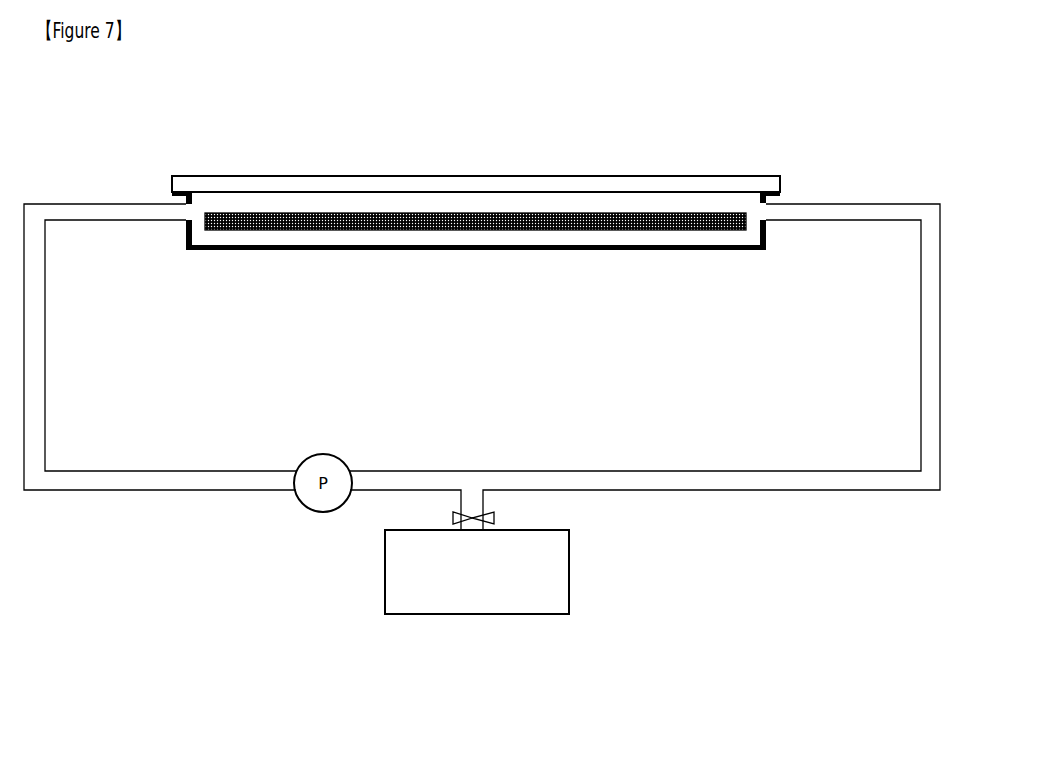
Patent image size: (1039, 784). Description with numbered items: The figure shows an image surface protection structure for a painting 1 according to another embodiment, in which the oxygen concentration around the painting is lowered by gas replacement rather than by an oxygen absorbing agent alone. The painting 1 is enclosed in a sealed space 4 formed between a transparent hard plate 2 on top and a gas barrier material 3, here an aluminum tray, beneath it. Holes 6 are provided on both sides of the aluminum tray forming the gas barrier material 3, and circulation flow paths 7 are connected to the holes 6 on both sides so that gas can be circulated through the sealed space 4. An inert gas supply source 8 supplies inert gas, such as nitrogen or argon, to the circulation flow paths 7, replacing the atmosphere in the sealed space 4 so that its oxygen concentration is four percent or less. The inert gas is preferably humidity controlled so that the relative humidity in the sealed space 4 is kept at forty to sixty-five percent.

The painting 1 is at (686, 212).
The transparent hard plate 2 is at (397, 177).
The gas barrier material 3 is at (303, 250).
The sealed space 4 is at (753, 250).
The holes 6 is at (765, 212).
The circulation flow paths 7 is at (757, 480).
The inert gas supply source 8 is at (517, 598).